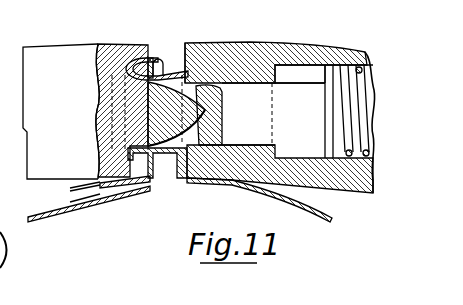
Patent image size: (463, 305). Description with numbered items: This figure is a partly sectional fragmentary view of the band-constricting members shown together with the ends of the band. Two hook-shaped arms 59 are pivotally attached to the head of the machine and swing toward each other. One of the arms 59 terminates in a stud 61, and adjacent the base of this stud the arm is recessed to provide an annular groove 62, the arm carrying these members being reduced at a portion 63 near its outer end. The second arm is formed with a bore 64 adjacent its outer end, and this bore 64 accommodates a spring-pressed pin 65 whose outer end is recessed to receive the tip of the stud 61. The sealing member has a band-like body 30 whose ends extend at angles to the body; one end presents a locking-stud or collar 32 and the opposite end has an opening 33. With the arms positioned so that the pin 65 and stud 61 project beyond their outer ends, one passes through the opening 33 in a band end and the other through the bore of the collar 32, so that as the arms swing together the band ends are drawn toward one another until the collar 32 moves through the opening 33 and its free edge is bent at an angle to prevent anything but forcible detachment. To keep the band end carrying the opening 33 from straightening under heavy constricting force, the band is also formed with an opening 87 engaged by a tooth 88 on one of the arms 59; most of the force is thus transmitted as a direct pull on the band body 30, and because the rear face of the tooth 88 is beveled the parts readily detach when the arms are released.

The hook-shaped arms 59 is at (350, 38).
The annular groove 62 is at (140, 57).
The opening 33 is at (152, 62).
The locking-stud or collar 32 is at (168, 70).
The bore 64 is at (304, 68).
The spring-pressed pin 65 is at (273, 114).
The stud 61 is at (170, 157).
The reduced portion 63 is at (127, 180).
The band-like body 30 is at (57, 221).
The tooth 88 is at (77, 190).
The opening 87 is at (82, 199).